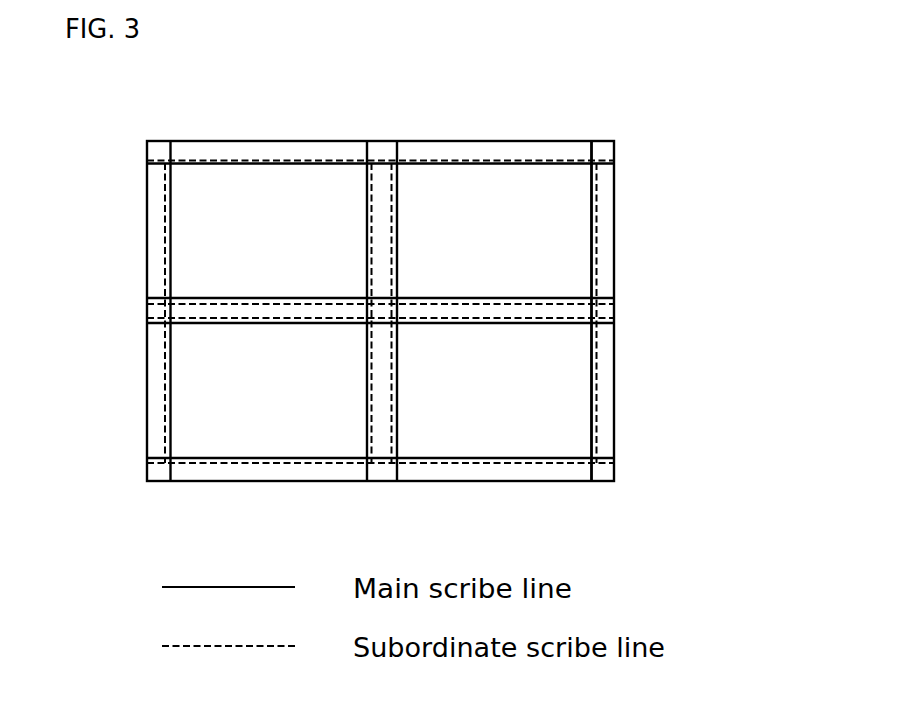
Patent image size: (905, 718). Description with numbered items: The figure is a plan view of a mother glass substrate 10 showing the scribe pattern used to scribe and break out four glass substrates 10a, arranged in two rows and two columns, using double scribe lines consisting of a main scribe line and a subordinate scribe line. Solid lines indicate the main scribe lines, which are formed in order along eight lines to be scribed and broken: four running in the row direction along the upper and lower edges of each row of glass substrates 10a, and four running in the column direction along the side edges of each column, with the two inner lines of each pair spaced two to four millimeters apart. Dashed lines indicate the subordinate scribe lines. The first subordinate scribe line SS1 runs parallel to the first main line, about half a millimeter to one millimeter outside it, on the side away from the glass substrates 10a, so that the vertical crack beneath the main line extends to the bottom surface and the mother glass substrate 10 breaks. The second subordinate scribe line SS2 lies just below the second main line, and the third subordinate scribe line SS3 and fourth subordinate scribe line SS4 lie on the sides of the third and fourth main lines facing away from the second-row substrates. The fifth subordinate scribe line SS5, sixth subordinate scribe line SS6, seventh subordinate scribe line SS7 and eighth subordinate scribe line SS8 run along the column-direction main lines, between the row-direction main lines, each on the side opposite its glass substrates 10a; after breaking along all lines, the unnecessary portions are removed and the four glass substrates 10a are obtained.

The mother glass substrate 10 is at (126, 418).
The glass substrate 10a is at (187, 256).
The first subordinate scribe line SS1 is at (533, 160).
The second subordinate scribe line SS2 is at (577, 305).
The third subordinate scribe line SS3 is at (586, 322).
The fourth subordinate scribe line SS4 is at (192, 463).
The fifth subordinate scribe line SS5 is at (165, 203).
The sixth subordinate scribe line SS6 is at (376, 163).
The seventh subordinate scribe line SS7 is at (391, 208).
The eighth subordinate scribe line SS8 is at (597, 408).